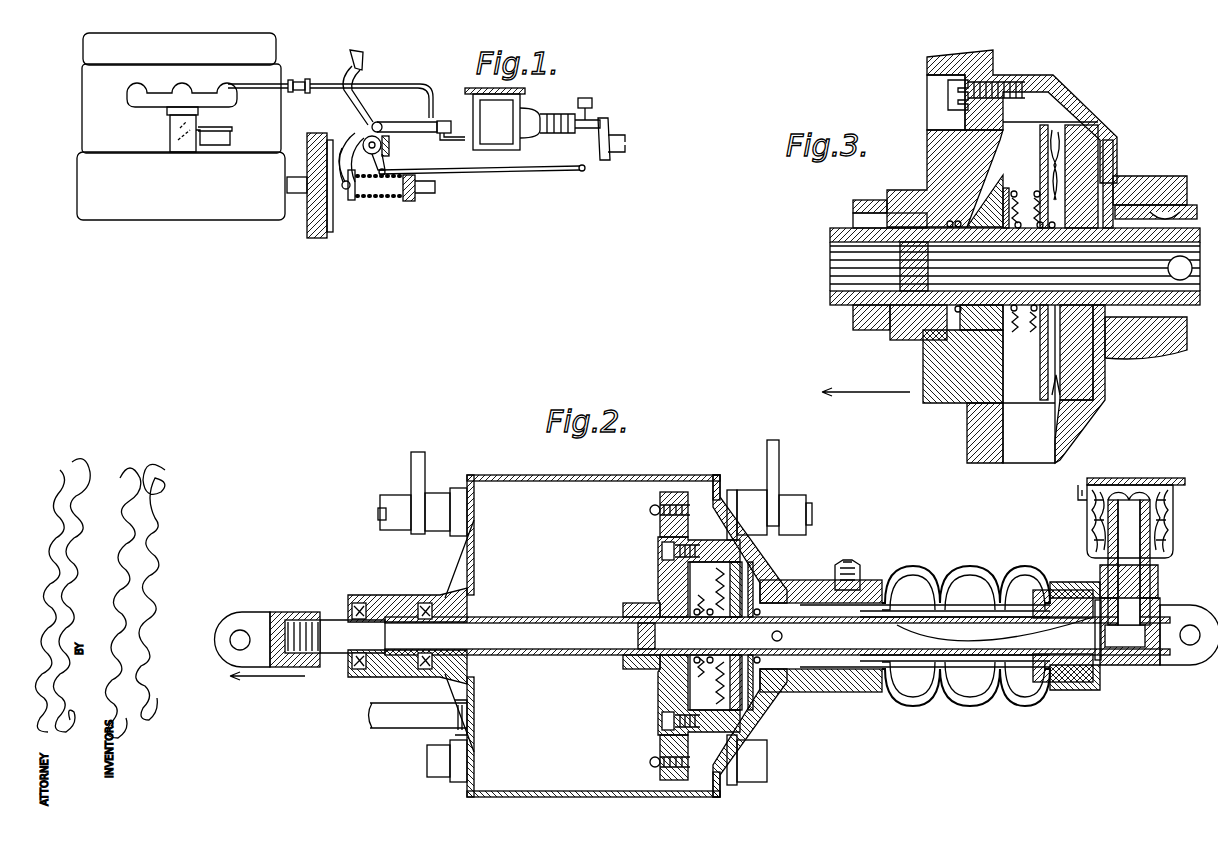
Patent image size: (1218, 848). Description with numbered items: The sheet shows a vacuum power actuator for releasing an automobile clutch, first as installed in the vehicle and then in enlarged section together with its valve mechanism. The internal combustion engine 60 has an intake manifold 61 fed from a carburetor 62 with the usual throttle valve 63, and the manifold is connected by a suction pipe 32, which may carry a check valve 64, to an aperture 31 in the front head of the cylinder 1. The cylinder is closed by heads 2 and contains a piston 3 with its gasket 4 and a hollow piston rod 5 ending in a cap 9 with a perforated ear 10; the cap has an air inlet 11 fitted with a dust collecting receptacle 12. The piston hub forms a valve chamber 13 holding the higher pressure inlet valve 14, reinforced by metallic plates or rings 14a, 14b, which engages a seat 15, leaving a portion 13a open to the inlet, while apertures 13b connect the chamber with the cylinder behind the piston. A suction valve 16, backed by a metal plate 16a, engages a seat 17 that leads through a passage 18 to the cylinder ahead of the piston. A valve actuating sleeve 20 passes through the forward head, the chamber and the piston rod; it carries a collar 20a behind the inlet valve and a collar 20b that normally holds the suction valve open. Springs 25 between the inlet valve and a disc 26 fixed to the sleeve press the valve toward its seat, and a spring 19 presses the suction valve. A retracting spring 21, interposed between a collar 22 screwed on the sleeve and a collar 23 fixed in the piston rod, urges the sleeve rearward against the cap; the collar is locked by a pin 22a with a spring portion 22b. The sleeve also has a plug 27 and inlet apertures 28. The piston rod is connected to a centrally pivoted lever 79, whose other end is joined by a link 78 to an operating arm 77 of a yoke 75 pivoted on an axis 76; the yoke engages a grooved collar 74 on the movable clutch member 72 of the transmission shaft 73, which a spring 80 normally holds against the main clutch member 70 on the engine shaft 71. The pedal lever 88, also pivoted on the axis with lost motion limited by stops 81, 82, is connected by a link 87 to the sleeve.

In FIG. 1, the cylinder 1 is at (492, 100).
In FIG. 2, the cylinder 1 is at (552, 481).
In FIG. 2, the heads 2 is at (758, 576).
In FIG. 2, the piston 3 is at (660, 582).
In FIG. 2, the gasket 4 is at (672, 490).
In FIG. 2, the hollow piston rod 5 is at (882, 603).
In FIG. 2, the cap 9 is at (1160, 600).
In FIG. 2, the perforated ear 10 is at (1192, 650).
In FIG. 2, the inlet 11 is at (1130, 575).
In FIG. 2, the dust collecting receptacle 12 is at (1170, 512).
In FIG. 3, the valve chamber 13 is at (1020, 120).
In FIG. 3, the valve chamber portion 13a is at (1118, 174).
In FIG. 3, the apertures 13b is at (1020, 440).
In FIG. 3, the higher pressure inlet valve 14 is at (1075, 128).
In FIG. 3, the metallic reinforcing plate 14a is at (1092, 355).
In FIG. 3, the metallic reinforcing ring 14b is at (1095, 400).
In FIG. 3, the valve seat 15 is at (1105, 138).
In FIG. 3, the lower pressure valve 16 is at (960, 318).
In FIG. 3, the metal plate 16a is at (965, 185).
In FIG. 3, the valve seat 17 is at (1042, 360).
In FIG. 3, the passage 18 is at (860, 220).
In FIG. 2, the passage 18 is at (625, 612).
In FIG. 3, the spring 19 is at (1010, 194).
In FIG. 3, the valve actuating sleeve 20 is at (830, 262).
In FIG. 2, the valve actuating sleeve 20 is at (560, 612).
In FIG. 3, the collar 20a is at (1172, 200).
In FIG. 3, the collar 20b is at (900, 318).
In FIG. 2, the retracting spring 21 is at (1052, 672).
In FIG. 2, the collar 22 is at (1095, 670).
In FIG. 2, the pin 22a is at (1097, 605).
In FIG. 2, the spring portion 22b is at (948, 645).
In FIG. 2, the collar 23 is at (1020, 692).
In FIG. 3, the springs 25 is at (1055, 400).
In FIG. 3, the plate or disc 26 is at (1025, 403).
In FIG. 3, the plug 27 is at (905, 275).
In FIG. 2, the plug 27 is at (640, 640).
In FIG. 2, the inlet apertures 28 is at (783, 636).
In FIG. 2, the aperture 31 is at (478, 738).
In FIG. 1, the suction pipe 32 is at (398, 83).
In FIG. 2, the suction pipe 32 is at (396, 725).
In FIG. 1, the internal combustion engine 60 is at (84, 50).
In FIG. 1, the intake manifold 61 is at (134, 98).
In FIG. 1, the carburetor 62 is at (186, 152).
In FIG. 1, the throttle valve 63 is at (168, 135).
In FIG. 1, the check valve 64 is at (300, 80).
In FIG. 1, the main clutch member 70 is at (314, 240).
In FIG. 1, the engine shaft 71 is at (298, 193).
In FIG. 1, the movable clutch member 72 is at (332, 222).
In FIG. 1, the transmission shaft 73 is at (433, 190).
In FIG. 1, the grooved collar 74 is at (355, 198).
In FIG. 1, the yoke 75 is at (342, 146).
In FIG. 1, the axis 76 is at (382, 145).
In FIG. 1, the operating arm 77 is at (386, 160).
In FIG. 1, the link 78 is at (520, 171).
In FIG. 1, the centrally pivoted lever 79 is at (604, 160).
In FIG. 1, the clutch spring 80 is at (396, 198).
In FIG. 1, the stop 81 is at (372, 122).
In FIG. 1, the stop 82 is at (352, 130).
In FIG. 1, the link 87 is at (445, 120).
In FIG. 1, the pedal lever 88 is at (366, 62).